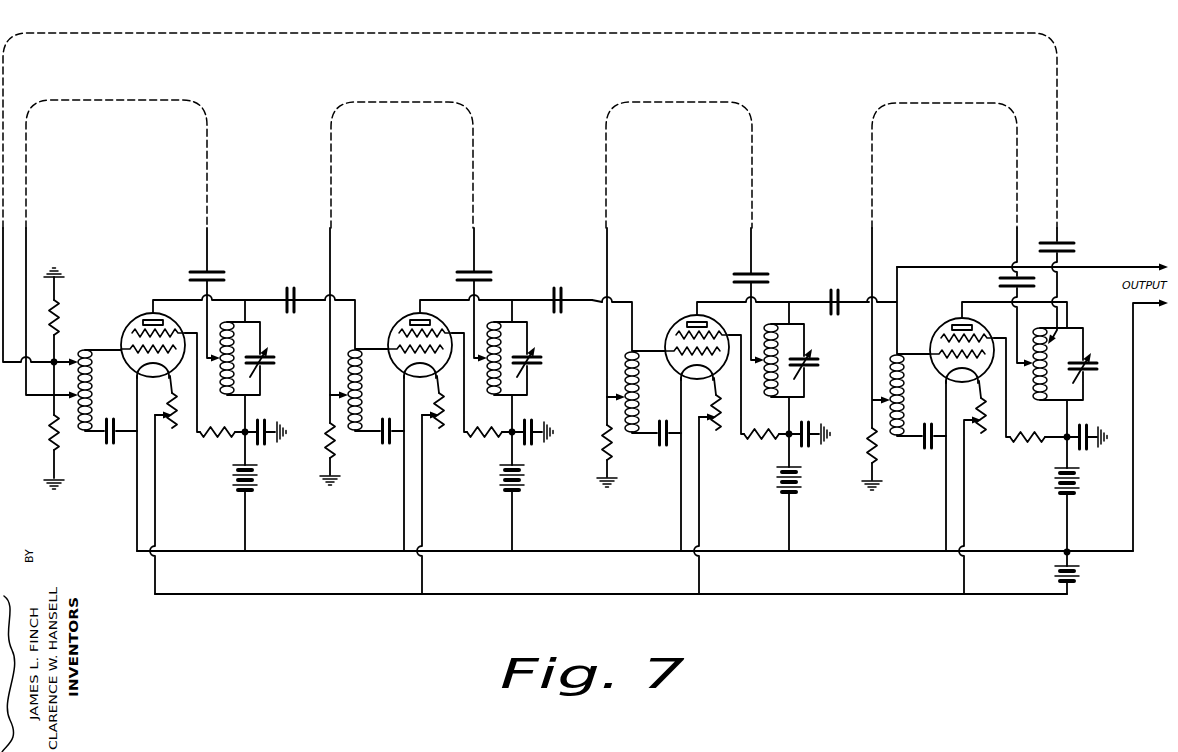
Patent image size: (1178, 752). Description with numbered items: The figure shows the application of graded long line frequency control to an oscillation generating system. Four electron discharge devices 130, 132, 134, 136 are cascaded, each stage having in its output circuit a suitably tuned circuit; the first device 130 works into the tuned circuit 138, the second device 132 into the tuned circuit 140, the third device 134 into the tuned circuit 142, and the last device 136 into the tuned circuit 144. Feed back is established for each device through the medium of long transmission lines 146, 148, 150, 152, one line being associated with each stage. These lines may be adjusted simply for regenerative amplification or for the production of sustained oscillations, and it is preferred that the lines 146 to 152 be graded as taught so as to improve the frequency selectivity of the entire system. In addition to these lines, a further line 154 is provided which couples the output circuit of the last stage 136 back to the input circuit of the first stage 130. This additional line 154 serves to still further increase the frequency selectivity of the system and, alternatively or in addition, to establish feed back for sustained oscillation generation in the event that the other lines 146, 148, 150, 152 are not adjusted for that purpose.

The electron discharge device 130 is at (137, 318).
The electron discharge device 132 is at (408, 316).
The electron discharge device 134 is at (682, 318).
The electron discharge device 136 is at (948, 322).
The tuned circuit 138 is at (250, 332).
The tuned circuit 140 is at (518, 330).
The tuned circuit 142 is at (797, 330).
The tuned circuit 144 is at (1075, 337).
The long transmission line 146 is at (100, 100).
The long transmission line 148 is at (398, 102).
The long transmission line 150 is at (675, 102).
The long transmission line 152 is at (943, 95).
The line 154 is at (545, 25).